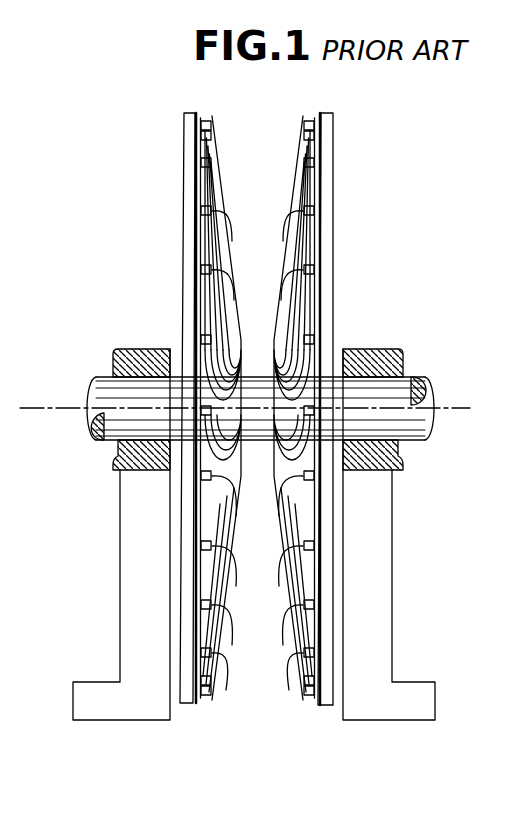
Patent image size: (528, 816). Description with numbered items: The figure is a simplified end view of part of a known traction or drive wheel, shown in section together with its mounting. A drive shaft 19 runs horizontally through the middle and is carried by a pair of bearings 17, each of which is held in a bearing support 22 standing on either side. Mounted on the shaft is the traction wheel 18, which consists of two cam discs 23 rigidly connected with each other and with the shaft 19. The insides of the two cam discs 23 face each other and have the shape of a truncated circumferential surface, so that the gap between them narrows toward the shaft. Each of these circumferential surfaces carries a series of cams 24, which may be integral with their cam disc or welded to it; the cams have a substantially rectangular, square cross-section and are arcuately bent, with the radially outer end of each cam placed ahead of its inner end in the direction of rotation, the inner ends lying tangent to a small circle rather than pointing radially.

The bearing 17 is at (146, 357).
The traction wheel 18 is at (158, 166).
The drive shaft 19 is at (103, 386).
The bearing support 22 is at (133, 577).
The cam disc 23 is at (190, 236).
The cam 24 is at (310, 152).